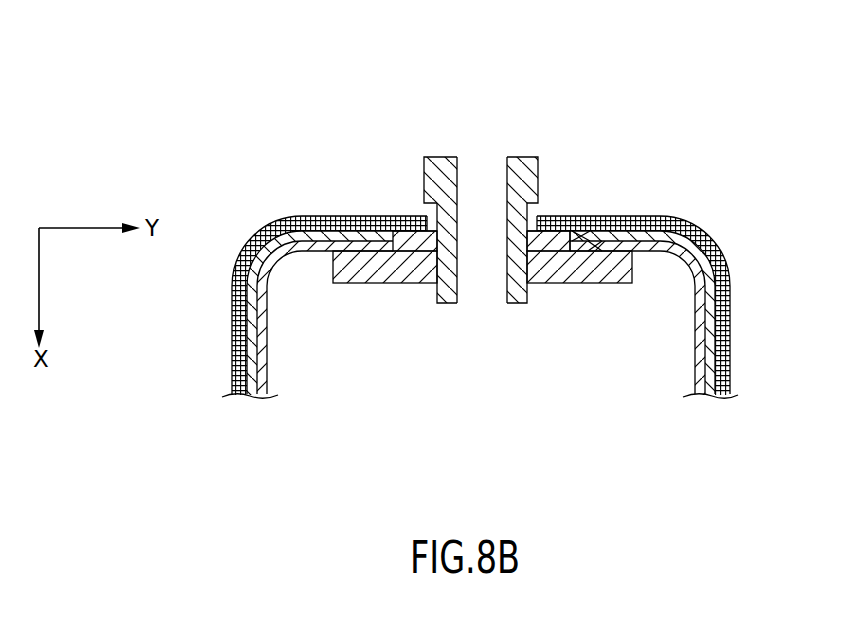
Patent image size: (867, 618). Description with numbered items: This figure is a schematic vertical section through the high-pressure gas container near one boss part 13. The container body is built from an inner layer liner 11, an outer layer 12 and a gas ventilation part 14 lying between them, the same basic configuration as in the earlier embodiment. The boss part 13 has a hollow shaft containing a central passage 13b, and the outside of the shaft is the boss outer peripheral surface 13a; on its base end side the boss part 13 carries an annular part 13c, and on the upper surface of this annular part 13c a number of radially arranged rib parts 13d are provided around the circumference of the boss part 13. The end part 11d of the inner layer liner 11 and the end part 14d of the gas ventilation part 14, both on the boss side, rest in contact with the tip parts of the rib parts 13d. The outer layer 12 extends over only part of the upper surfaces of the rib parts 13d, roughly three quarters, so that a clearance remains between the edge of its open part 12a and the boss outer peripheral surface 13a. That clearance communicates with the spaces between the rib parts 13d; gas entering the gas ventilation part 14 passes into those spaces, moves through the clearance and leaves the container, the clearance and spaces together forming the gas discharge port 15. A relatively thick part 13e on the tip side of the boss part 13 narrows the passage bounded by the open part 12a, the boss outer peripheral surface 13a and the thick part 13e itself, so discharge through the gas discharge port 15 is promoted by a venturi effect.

The inner layer liner 11 is at (703, 370).
The end part of the inner layer liner 11d is at (578, 247).
The outer layer 12 is at (727, 293).
The open part of the outer layer 12a is at (422, 213).
The boss part 13 is at (557, 172).
The boss outer peripheral surface 13a is at (540, 212).
The through hole of terminal 13b is at (468, 160).
The annular part 13c is at (395, 272).
The rib parts 13d is at (425, 213).
The thick part 13e is at (540, 165).
The gas ventilation part 14 is at (713, 333).
The end part of the gas ventilation part 14d is at (573, 237).
The gas discharge port 15 is at (427, 237).